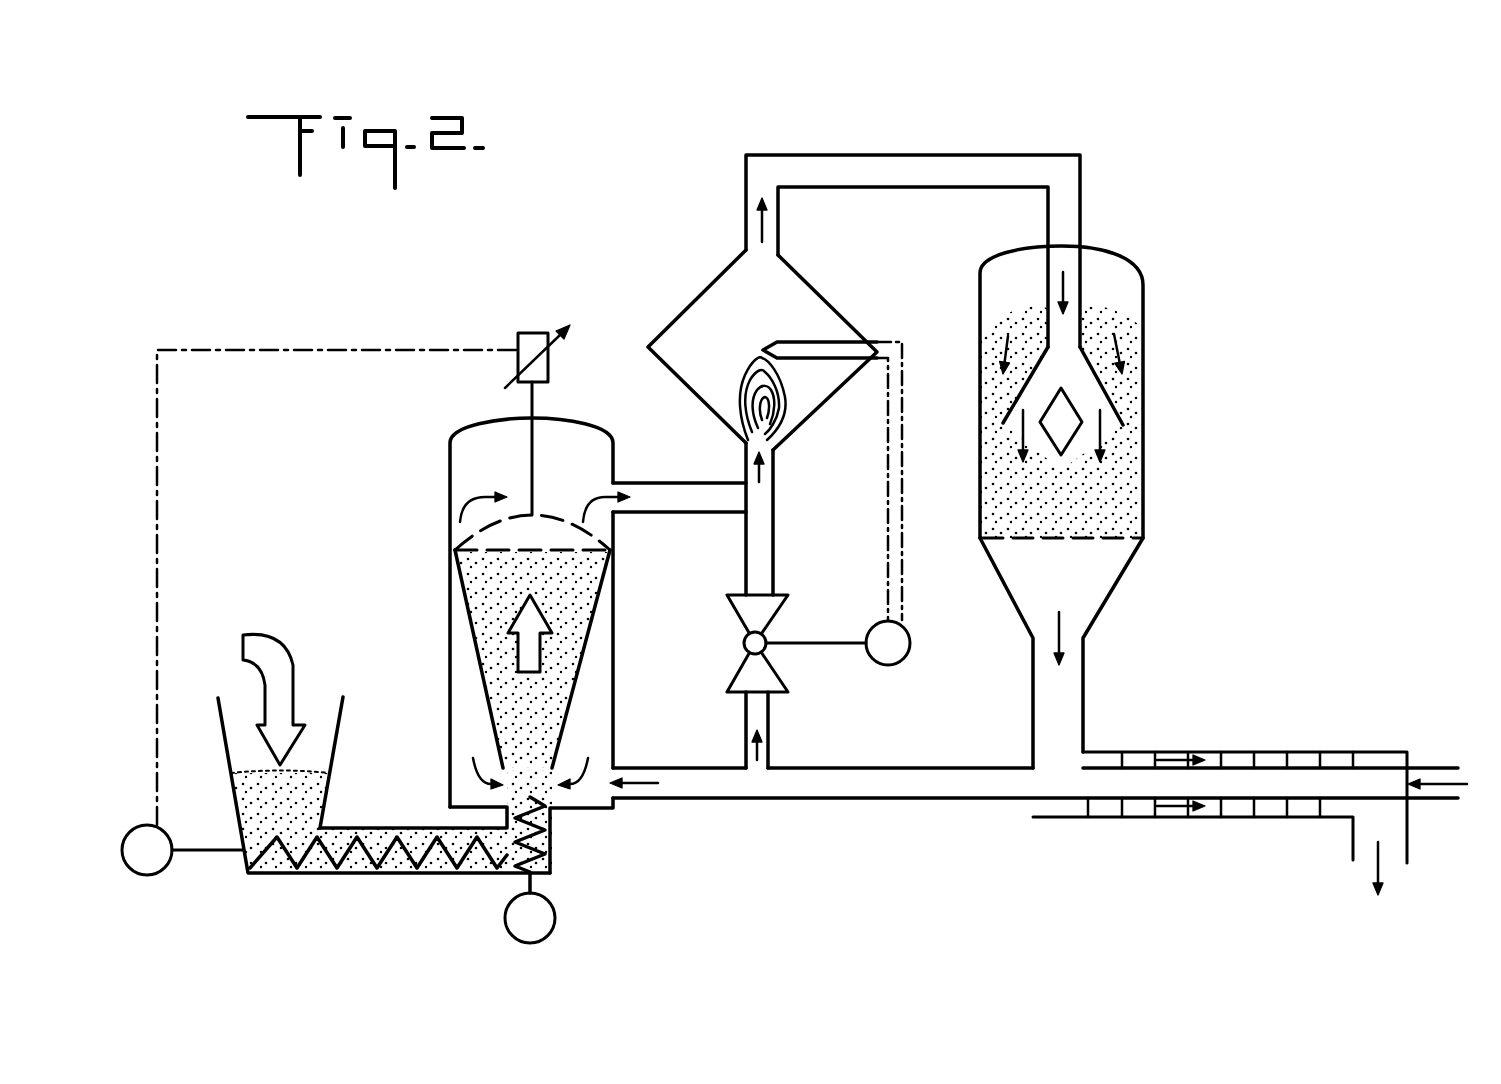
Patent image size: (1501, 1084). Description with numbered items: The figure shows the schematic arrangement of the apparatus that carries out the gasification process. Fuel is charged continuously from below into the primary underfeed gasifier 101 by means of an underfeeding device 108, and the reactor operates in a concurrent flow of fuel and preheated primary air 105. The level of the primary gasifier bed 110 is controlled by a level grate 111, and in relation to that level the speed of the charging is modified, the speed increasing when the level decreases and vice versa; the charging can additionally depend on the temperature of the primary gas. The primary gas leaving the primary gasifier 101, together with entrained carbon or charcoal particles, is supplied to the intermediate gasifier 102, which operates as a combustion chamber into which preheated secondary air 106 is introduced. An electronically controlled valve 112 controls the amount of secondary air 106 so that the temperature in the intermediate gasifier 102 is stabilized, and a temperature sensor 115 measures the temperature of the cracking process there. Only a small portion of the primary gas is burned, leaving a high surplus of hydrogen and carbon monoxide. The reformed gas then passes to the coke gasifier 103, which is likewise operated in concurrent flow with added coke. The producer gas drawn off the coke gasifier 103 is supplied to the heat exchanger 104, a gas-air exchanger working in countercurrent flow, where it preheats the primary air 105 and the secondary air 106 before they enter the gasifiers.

The primary underfeed gasifier 101 is at (613, 652).
The intermediate gasifier 102 is at (717, 397).
The coke gasifier 103 is at (1130, 393).
The heat exchanger 104 is at (1118, 803).
The primary air 105 is at (635, 782).
The secondary air 106 is at (767, 737).
The underfeeding device 108 is at (548, 842).
The primary gasifier bed 110 is at (478, 626).
The level grate 111 is at (473, 558).
The electronically controlled valve 112 is at (778, 608).
The temperature sensor 115 is at (765, 342).